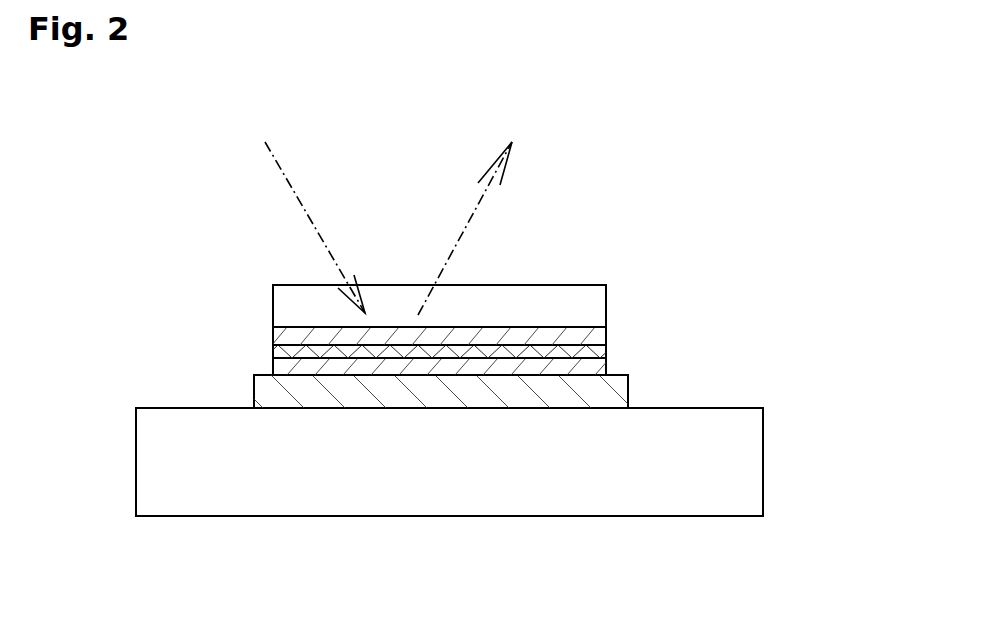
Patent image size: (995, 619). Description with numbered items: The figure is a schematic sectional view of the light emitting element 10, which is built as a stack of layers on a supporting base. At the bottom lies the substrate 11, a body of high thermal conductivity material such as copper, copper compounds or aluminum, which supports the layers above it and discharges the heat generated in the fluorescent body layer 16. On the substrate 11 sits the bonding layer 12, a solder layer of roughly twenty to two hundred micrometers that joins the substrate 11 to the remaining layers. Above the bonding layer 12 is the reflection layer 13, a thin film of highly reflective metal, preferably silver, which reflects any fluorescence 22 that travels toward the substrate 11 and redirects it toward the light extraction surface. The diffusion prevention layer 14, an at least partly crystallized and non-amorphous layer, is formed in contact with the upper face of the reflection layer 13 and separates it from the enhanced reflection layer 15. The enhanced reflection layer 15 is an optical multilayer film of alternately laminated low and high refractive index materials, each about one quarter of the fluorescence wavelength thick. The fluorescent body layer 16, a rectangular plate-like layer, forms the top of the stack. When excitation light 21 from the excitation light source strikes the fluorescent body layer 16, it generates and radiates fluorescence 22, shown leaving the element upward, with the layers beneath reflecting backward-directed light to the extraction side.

The light emitting element 10 is at (868, 564).
The substrate 11 is at (753, 487).
The bonding layer 12 is at (605, 397).
The reflection layer 13 is at (590, 367).
The diffusion prevention layer 14 is at (585, 351).
The enhanced reflection layer 15 is at (578, 340).
The fluorescent body layer 16 is at (583, 304).
The excitation light 21 is at (300, 205).
The fluorescence 22 is at (465, 230).